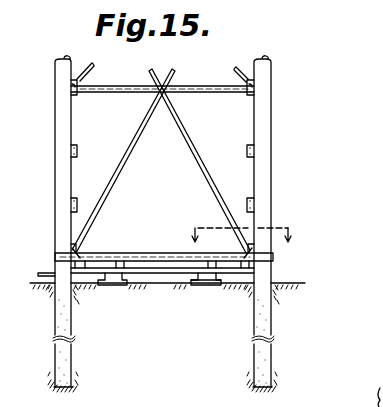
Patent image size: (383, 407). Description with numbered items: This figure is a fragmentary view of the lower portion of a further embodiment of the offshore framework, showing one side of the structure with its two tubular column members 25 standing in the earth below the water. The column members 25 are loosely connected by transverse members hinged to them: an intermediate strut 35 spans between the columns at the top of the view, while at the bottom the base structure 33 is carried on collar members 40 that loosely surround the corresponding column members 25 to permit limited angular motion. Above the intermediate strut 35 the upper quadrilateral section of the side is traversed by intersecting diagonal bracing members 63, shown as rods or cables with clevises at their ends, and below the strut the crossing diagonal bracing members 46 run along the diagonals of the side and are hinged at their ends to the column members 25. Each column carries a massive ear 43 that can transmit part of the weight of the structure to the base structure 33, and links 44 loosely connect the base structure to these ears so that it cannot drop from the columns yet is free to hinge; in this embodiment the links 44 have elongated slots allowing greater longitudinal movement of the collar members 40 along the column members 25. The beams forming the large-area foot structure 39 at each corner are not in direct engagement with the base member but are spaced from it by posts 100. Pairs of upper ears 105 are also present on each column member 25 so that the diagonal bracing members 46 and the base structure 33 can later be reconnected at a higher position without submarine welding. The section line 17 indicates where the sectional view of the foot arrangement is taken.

The tubular column member 25 is at (264, 116).
The intermediate strut 35 is at (119, 88).
The diagonal bracing member 63 is at (240, 75).
The upper ear 105 is at (70, 195).
The diagonal bracing member 46 is at (110, 181).
The ear 43 is at (70, 250).
The link 44 is at (247, 250).
The collar member 40 is at (55, 258).
The post 100 is at (113, 268).
The foot structure 39 is at (214, 294).
The base structure 33 is at (155, 252).
The section line 17 is at (244, 238).